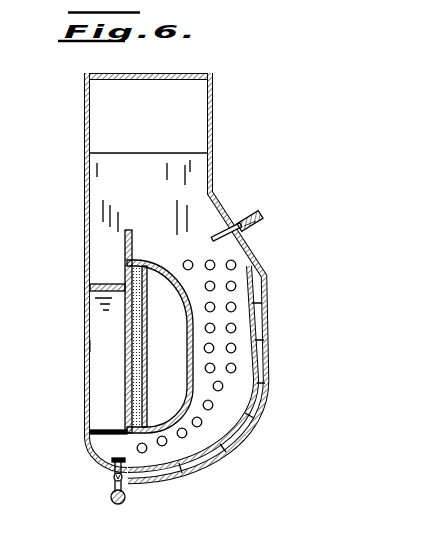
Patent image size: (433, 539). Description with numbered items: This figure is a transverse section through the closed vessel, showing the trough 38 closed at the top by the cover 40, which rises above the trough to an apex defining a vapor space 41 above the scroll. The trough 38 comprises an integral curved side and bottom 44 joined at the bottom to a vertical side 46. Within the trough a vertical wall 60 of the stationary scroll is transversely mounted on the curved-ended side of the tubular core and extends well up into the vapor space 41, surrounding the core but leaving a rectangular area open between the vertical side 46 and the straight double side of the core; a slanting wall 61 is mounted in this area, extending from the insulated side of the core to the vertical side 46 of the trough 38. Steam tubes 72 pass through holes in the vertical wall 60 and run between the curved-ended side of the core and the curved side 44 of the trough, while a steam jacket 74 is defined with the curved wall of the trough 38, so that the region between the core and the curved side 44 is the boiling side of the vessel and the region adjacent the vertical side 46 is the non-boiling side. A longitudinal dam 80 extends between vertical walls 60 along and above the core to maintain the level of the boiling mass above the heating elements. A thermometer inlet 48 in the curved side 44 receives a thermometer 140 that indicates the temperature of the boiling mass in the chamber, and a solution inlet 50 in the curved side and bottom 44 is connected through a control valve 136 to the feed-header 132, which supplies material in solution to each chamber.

The cover 40 is at (84, 160).
The vapor space 41 is at (125, 110).
The vertical walls 60 is at (193, 185).
The thermometer inlets 48 is at (238, 220).
The thermometers 140 is at (257, 224).
The longitudinal dams 80 is at (137, 243).
The trough 38 is at (88, 297).
The vertical side 46 is at (84, 345).
The slanting walls 61 is at (105, 388).
The solution inlets 50 is at (112, 453).
The control valves 136 is at (107, 480).
The feed-header 132 is at (126, 498).
The curved side and bottom 44 is at (213, 443).
The steam tubes 72 is at (213, 405).
The steam jacket 74 is at (257, 318).